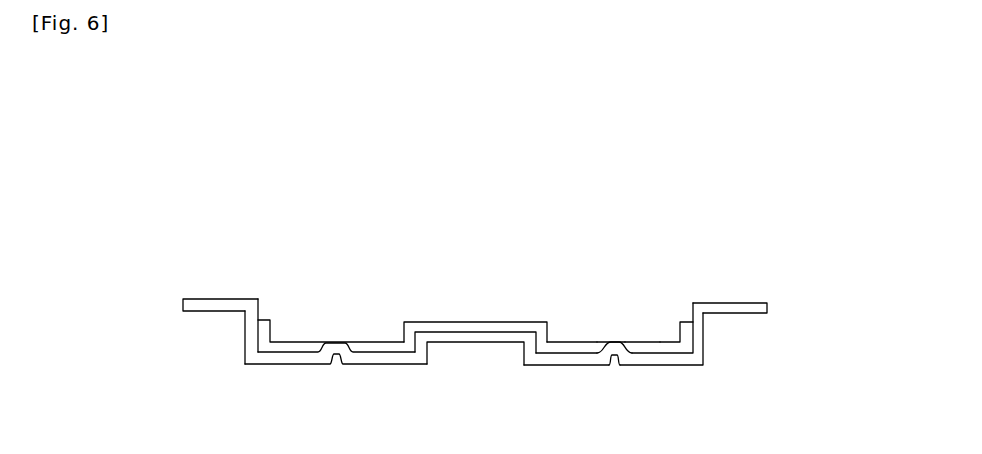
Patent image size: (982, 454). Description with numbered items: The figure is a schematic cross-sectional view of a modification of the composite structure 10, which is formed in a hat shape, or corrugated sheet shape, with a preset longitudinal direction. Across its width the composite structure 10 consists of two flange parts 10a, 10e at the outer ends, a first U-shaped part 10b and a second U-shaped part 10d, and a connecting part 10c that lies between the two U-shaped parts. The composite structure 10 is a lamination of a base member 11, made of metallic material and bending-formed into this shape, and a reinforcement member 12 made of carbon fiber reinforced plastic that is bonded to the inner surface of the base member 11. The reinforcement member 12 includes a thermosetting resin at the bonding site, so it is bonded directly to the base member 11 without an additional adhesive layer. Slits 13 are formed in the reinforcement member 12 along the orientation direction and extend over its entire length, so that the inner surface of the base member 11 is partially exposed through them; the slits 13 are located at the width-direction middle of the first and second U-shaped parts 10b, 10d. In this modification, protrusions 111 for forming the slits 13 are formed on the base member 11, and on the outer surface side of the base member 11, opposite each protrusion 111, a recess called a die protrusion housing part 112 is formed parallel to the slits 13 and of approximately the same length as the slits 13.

The composite structure 10 is at (837, 207).
The flange part 10a is at (733, 302).
The first U-shaped part 10b is at (567, 365).
The connecting part 10c is at (475, 343).
The second U-shaped part 10d is at (290, 365).
The flange part 10e is at (217, 298).
The base member 11 is at (768, 306).
The reinforcement member 12 is at (470, 328).
The slit 13 is at (625, 342).
The protrusion 111 is at (613, 342).
The die protrusion housing part 112 is at (617, 367).